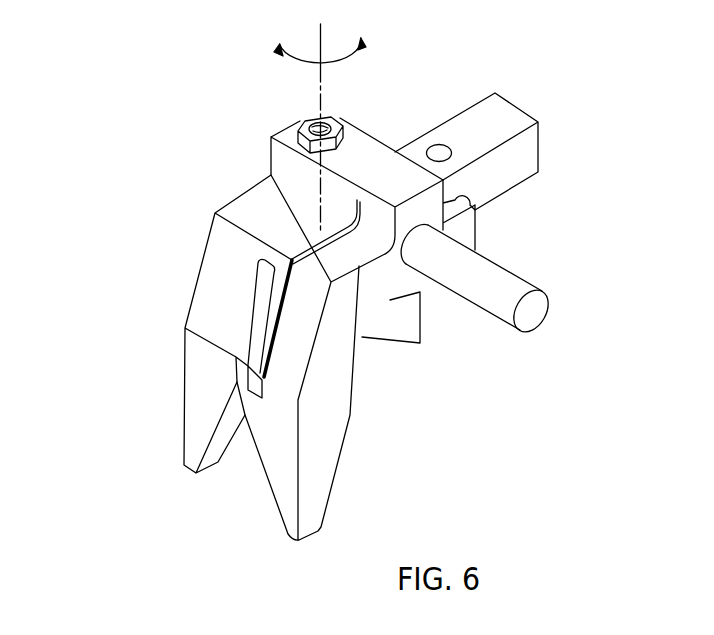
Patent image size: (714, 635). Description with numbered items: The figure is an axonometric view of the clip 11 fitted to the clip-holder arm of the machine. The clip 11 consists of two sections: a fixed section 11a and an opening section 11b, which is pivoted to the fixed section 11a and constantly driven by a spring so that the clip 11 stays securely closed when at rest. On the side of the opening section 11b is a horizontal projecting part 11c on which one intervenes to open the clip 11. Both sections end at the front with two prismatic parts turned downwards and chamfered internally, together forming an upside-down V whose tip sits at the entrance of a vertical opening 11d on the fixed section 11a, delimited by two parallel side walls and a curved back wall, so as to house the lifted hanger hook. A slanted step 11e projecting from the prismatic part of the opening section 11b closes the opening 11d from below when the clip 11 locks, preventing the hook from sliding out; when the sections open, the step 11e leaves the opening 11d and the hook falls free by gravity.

The clip 11 is at (192, 117).
The fixed section 11a is at (217, 267).
The opening section 11b is at (322, 468).
The horizontal projecting part 11c is at (477, 271).
The vertical opening 11d is at (255, 312).
The slanted step 11e is at (237, 382).